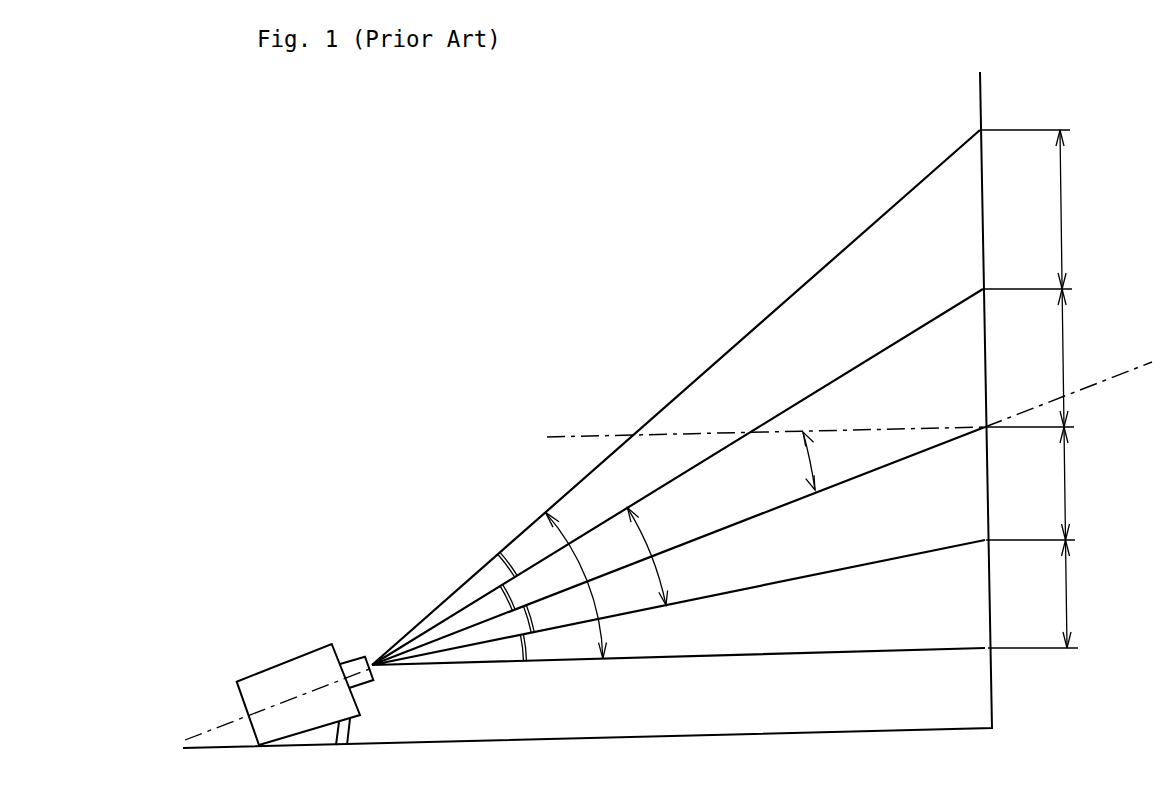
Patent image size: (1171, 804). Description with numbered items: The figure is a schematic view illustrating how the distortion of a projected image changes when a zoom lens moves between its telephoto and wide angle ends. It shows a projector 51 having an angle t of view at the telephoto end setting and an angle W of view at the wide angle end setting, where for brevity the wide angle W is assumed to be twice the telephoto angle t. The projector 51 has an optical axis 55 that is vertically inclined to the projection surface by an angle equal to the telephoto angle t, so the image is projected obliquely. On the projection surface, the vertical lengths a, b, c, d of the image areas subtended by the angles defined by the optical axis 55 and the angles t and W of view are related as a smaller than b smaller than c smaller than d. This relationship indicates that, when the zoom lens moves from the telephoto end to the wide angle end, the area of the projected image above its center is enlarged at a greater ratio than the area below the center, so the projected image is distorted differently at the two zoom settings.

The projector 51 is at (275, 677).
The optical axis 55 is at (1102, 382).
The vertical length of projected image area a is at (1033, 594).
The vertical length of projected image area b is at (1030, 491).
The vertical length of projected image area c is at (1029, 366).
The vertical length of projected image area d is at (1026, 217).
The angle of view at wide angle end setting W is at (587, 585).
The angle of view at telephoto end setting t is at (722, 518).